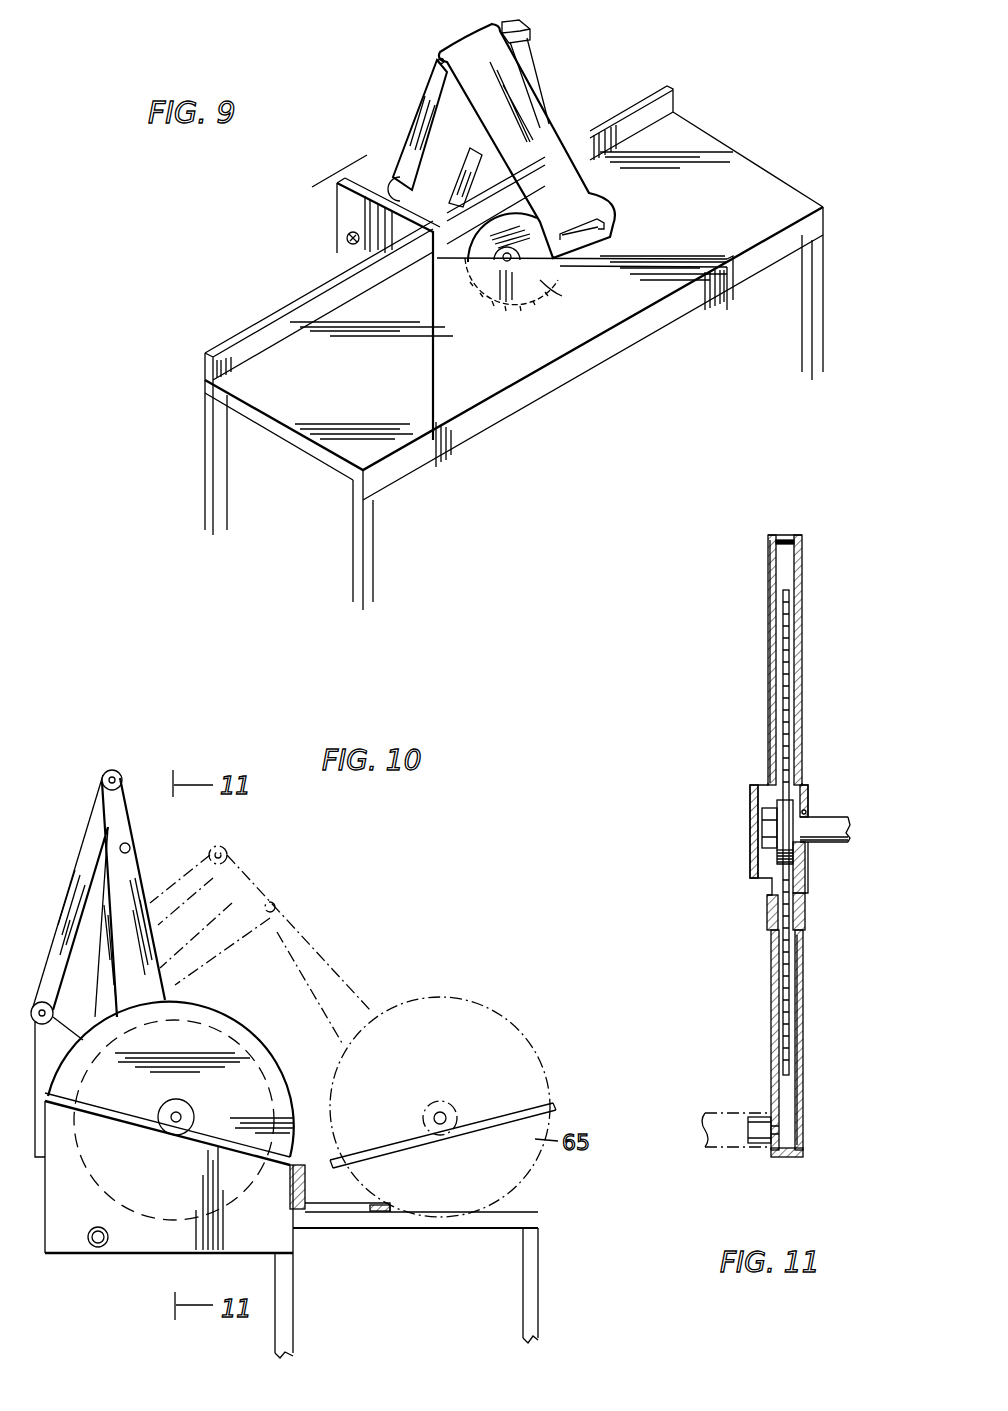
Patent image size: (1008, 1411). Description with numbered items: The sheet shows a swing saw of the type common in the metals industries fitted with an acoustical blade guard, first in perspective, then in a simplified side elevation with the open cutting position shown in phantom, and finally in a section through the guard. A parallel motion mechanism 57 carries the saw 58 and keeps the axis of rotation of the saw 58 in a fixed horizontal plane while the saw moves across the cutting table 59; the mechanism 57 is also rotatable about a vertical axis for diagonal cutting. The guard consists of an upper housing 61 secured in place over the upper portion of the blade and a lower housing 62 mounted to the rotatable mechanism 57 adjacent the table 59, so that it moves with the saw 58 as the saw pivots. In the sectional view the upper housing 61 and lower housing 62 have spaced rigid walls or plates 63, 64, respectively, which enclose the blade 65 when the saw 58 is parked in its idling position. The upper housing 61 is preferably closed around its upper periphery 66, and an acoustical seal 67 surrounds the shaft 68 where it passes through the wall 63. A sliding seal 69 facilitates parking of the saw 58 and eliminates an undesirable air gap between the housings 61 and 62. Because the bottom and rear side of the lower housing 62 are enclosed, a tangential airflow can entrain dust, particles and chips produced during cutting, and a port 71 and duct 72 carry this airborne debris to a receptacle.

In FIG. 9, the parallel motion mechanism 57 is at (408, 108).
In FIG. 10, the parallel motion mechanism 57 is at (80, 797).
In FIG. 9, the saw 58 is at (586, 266).
In FIG. 10, the saw 58 is at (275, 1028).
In FIG. 9, the cutting table 59 is at (620, 308).
In FIG. 10, the cutting table 59 is at (520, 1218).
In FIG. 9, the upper housing 61 is at (486, 250).
In FIG. 10, the upper housing 61 is at (229, 1020).
In FIG. 11, the upper housing 61 is at (749, 631).
In FIG. 9, the lower housing 62 is at (340, 238).
In FIG. 10, the lower housing 62 is at (250, 1237).
In FIG. 11, the lower housing 62 is at (782, 1043).
In FIG. 11, the wall 63 is at (770, 733).
In FIG. 11, the wall 64 is at (800, 980).
In FIG. 9, the blade 65 is at (522, 305).
In FIG. 10, the blade 65 is at (148, 1213).
In FIG. 11, the blade 65 is at (788, 627).
In FIG. 11, the upper periphery 66 is at (780, 540).
In FIG. 11, the acoustical seal 67 is at (810, 812).
In FIG. 11, the shaft 68 is at (830, 838).
In FIG. 9, the sliding seal 69 is at (552, 294).
In FIG. 11, the sliding seal 69 is at (806, 913).
In FIG. 9, the port 71 is at (350, 246).
In FIG. 10, the port 71 is at (98, 1248).
In FIG. 11, the port 71 is at (777, 1127).
In FIG. 11, the duct 72 is at (713, 1148).